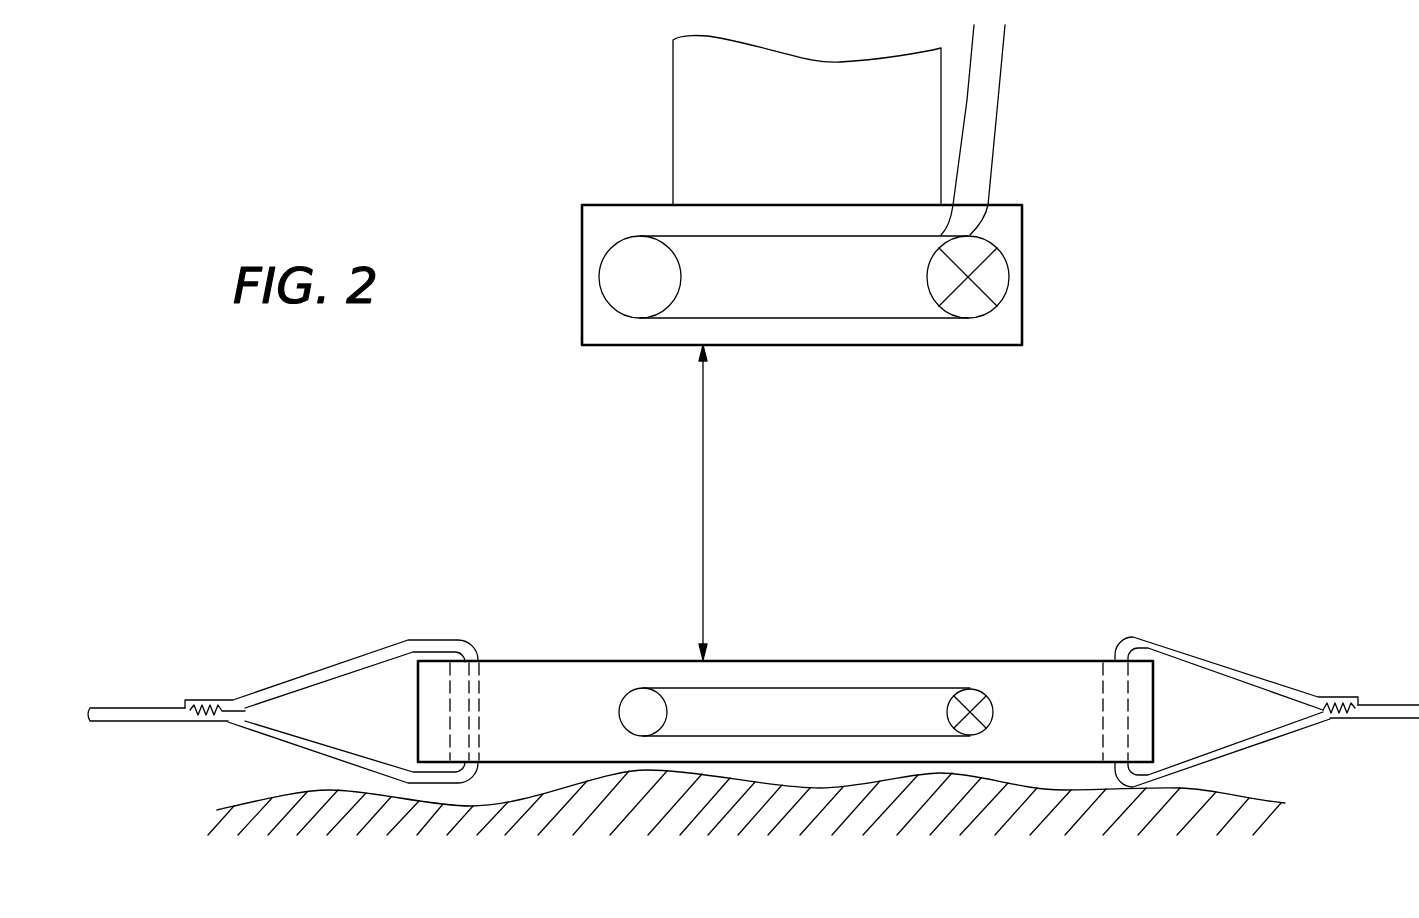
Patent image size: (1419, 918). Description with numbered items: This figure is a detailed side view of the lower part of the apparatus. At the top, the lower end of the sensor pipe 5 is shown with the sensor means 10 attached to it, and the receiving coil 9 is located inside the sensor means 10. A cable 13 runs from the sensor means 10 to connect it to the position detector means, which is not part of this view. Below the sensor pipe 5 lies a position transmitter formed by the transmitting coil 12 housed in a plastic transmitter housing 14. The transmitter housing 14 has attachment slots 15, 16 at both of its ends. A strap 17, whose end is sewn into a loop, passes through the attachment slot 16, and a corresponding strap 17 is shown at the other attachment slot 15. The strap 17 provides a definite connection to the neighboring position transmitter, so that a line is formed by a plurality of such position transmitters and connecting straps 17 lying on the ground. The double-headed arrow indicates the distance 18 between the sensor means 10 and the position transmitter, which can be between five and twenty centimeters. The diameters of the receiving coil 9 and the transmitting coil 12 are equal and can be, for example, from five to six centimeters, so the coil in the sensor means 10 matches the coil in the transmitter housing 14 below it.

The sensor pipe 5 is at (685, 177).
The receiving coil 9 is at (998, 280).
The sensor means 10 is at (808, 297).
The transmitting coil 12 is at (873, 702).
The cable 13 is at (963, 150).
The transmitter housing 14 is at (1023, 677).
The attachment slot 15 is at (1112, 638).
The attachment slot 16 is at (480, 647).
The strap 17 is at (363, 658).
The distance 18 is at (703, 482).